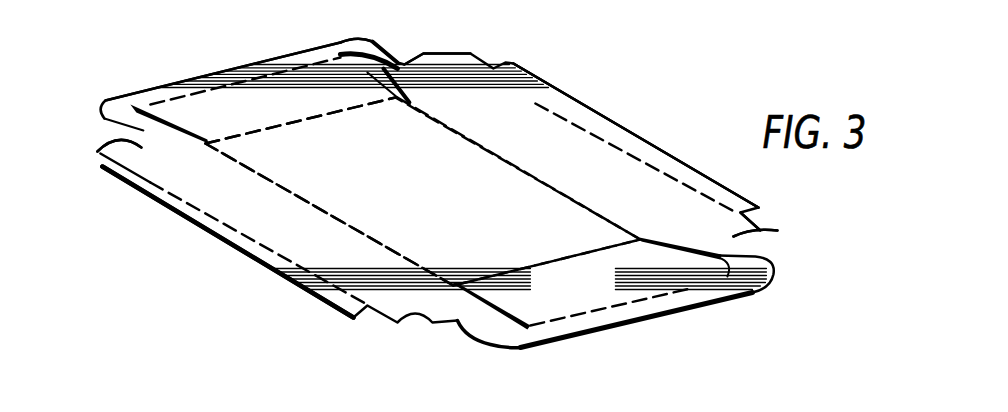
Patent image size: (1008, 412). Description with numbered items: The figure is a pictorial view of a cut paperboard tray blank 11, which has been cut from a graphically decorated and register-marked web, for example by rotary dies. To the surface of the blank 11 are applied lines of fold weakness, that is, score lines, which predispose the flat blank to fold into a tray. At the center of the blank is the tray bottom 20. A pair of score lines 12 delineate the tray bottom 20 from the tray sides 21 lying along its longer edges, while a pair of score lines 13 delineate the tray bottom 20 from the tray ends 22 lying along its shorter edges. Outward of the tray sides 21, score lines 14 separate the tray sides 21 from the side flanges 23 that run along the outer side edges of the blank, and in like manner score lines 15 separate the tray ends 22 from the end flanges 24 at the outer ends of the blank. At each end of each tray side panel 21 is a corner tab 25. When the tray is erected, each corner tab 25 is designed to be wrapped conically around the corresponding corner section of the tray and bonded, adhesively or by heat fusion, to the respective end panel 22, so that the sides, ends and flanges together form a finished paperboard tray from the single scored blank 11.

The paperboard blank 11 is at (706, 130).
The score lines 12 is at (494, 152).
The score lines 13 is at (321, 115).
The score lines 14 is at (150, 183).
The score lines 15 is at (303, 63).
The tray bottom 20 is at (429, 199).
The tray sides 21 is at (271, 222).
The tray ends 22 is at (252, 114).
The side flanges 23 is at (197, 220).
The end flanges 24 is at (253, 70).
The corner tab 25 is at (103, 147).